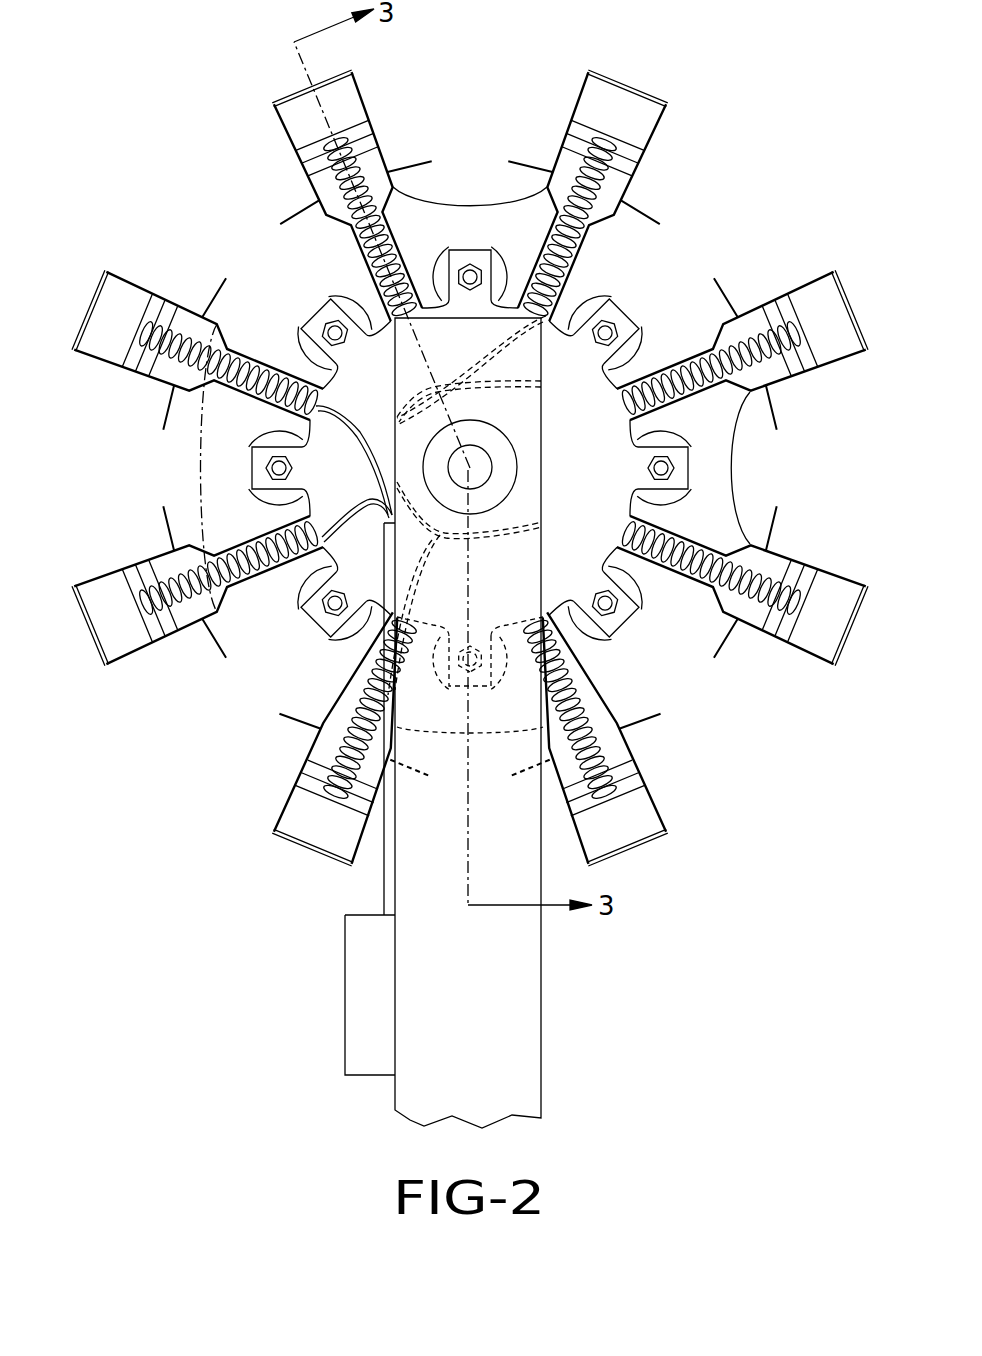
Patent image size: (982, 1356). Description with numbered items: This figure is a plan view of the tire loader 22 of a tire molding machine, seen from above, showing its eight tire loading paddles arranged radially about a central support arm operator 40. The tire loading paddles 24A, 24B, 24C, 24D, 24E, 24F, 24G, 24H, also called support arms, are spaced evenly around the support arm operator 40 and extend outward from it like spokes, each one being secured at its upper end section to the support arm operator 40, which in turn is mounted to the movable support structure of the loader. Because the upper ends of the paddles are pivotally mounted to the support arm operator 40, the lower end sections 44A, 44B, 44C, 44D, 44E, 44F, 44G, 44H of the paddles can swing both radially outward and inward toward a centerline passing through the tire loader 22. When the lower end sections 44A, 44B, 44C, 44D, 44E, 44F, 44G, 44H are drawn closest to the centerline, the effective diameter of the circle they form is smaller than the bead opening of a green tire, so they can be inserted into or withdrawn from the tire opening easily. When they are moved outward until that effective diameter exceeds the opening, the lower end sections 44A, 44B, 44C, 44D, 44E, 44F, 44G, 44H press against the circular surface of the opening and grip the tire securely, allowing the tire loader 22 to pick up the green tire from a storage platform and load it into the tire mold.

The tire loader 22 is at (466, 64).
The support arm operator 40 is at (572, 312).
The tire loading paddle 24A is at (838, 322).
The tire loading paddle 24B is at (835, 634).
The tire loading paddle 24C is at (625, 832).
The tire loading paddle 24D is at (315, 832).
The tire loading paddle 24E is at (105, 634).
The tire loading paddle 24F is at (102, 322).
The tire loading paddle 24G is at (318, 103).
The tire loading paddle 24H is at (622, 103).
The lower end section 44A is at (827, 300).
The lower end section 44B is at (827, 636).
The lower end section 44C is at (637, 823).
The lower end section 44D is at (303, 823).
The lower end section 44E is at (113, 636).
The lower end section 44F is at (113, 300).
The lower end section 44G is at (302, 112).
The lower end section 44H is at (640, 112).